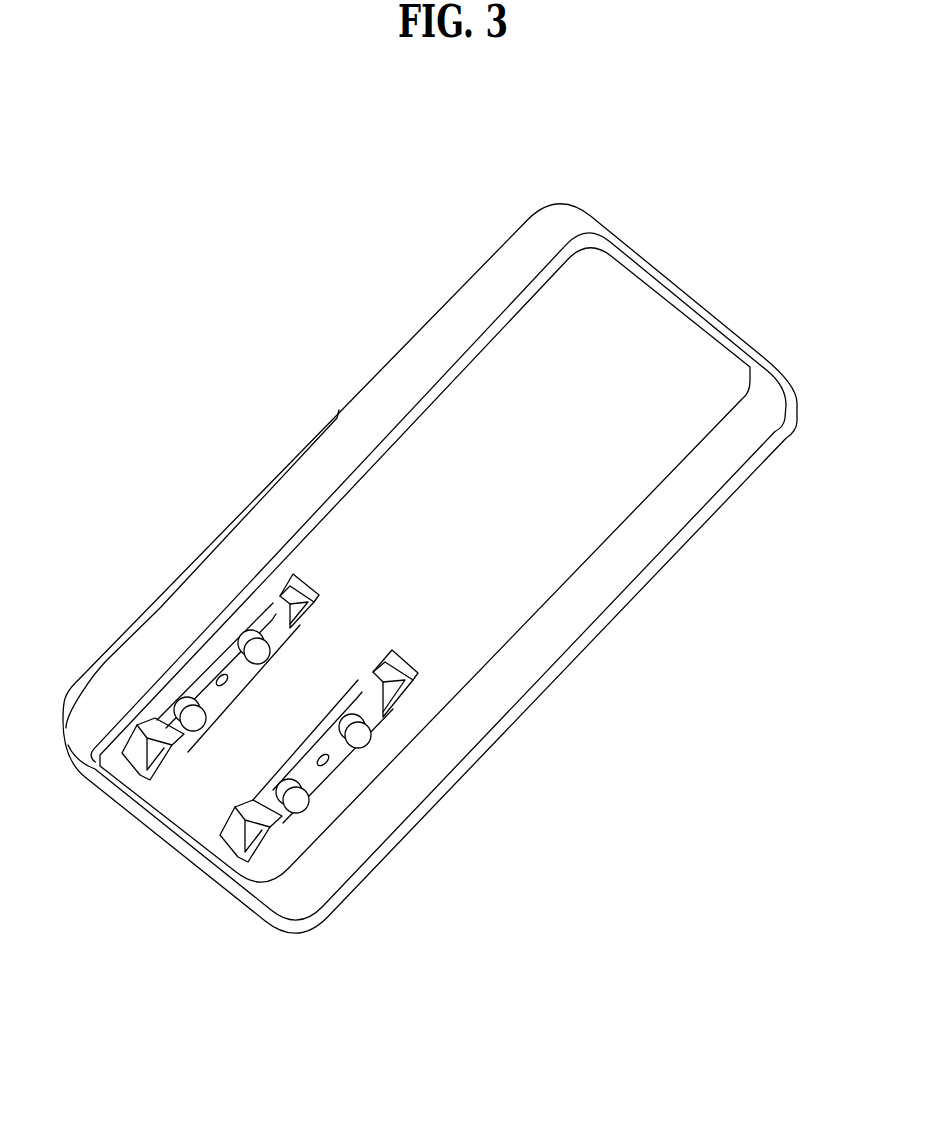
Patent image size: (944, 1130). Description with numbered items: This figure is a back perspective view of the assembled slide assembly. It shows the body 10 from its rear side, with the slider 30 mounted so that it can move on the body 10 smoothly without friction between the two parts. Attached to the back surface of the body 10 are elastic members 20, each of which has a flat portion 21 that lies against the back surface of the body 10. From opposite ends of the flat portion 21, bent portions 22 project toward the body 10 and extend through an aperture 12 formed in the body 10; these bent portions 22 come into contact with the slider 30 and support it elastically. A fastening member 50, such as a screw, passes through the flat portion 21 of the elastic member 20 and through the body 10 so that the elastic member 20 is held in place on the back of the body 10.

The body 10 is at (399, 351).
The aperture 12 is at (390, 684).
The elastic member 20 is at (291, 822).
The flat portion 21 is at (340, 755).
The bent portion 22 is at (240, 850).
The slider 30 is at (262, 474).
The fastening member 50 is at (366, 737).